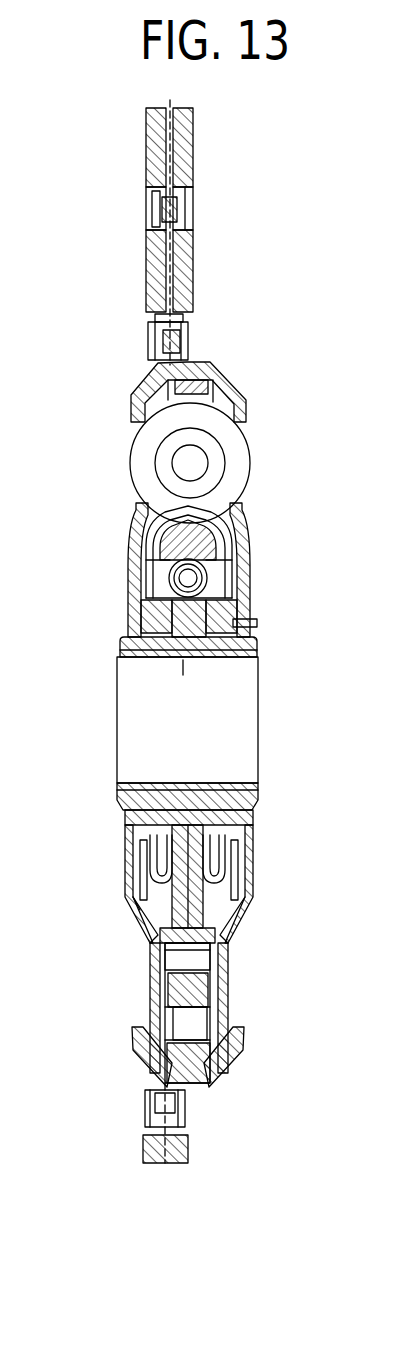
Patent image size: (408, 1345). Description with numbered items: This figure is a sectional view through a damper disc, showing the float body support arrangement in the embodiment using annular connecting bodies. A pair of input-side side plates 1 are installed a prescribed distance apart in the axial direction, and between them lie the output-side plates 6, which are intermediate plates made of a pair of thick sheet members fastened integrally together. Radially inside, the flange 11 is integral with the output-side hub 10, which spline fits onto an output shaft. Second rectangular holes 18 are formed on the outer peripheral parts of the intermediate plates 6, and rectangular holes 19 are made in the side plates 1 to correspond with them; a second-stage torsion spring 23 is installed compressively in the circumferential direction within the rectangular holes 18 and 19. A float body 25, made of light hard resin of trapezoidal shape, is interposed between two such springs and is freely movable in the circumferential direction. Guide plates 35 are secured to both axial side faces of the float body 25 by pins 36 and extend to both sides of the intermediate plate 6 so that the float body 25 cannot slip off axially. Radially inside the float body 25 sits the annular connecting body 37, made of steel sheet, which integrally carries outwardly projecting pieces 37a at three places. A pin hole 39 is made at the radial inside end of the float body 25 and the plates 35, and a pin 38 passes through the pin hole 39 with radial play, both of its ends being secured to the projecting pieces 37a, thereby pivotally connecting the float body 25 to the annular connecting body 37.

The input-side side plate 1 is at (128, 561).
The output-side plate 6 is at (180, 899).
The output-side hub 10 is at (128, 656).
The flange 11 is at (186, 657).
The second rectangular hole 18 is at (150, 382).
The rectangular hole 19 is at (141, 412).
The second-stage torsion spring 23 is at (238, 443).
The float body 25 is at (141, 937).
The guide plate 35 is at (165, 1004).
The pin 36 is at (192, 1068).
The annular connecting body 37 is at (128, 862).
The projecting piece 37a is at (152, 983).
The pin 38 is at (198, 958).
The pin hole 39 is at (223, 994).